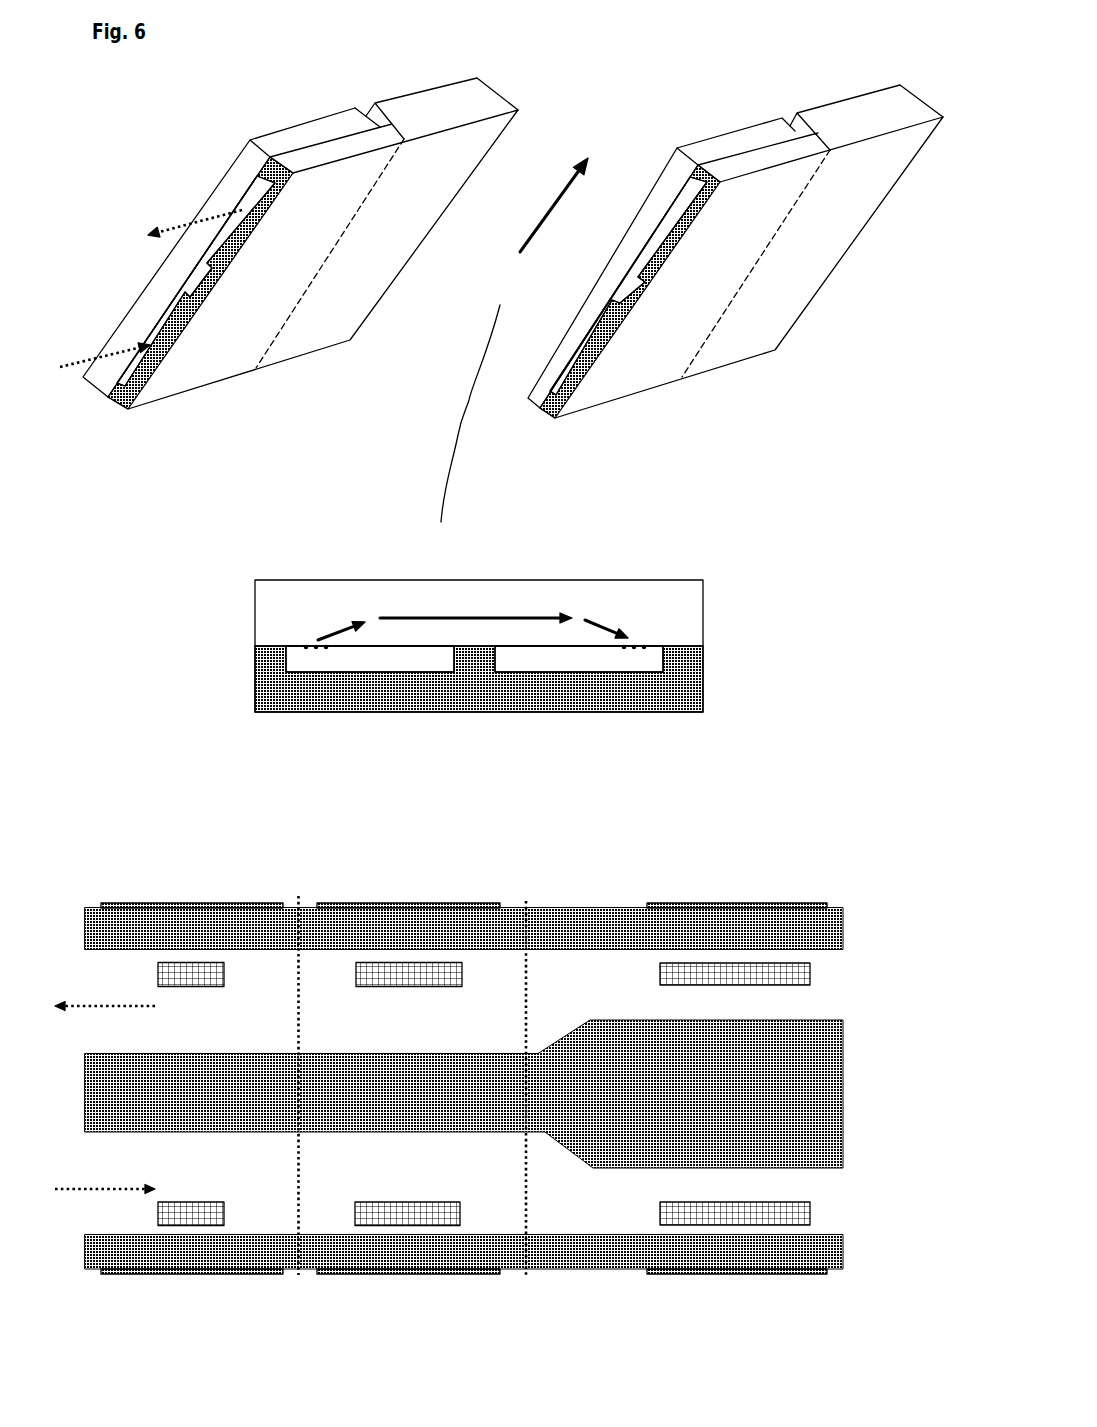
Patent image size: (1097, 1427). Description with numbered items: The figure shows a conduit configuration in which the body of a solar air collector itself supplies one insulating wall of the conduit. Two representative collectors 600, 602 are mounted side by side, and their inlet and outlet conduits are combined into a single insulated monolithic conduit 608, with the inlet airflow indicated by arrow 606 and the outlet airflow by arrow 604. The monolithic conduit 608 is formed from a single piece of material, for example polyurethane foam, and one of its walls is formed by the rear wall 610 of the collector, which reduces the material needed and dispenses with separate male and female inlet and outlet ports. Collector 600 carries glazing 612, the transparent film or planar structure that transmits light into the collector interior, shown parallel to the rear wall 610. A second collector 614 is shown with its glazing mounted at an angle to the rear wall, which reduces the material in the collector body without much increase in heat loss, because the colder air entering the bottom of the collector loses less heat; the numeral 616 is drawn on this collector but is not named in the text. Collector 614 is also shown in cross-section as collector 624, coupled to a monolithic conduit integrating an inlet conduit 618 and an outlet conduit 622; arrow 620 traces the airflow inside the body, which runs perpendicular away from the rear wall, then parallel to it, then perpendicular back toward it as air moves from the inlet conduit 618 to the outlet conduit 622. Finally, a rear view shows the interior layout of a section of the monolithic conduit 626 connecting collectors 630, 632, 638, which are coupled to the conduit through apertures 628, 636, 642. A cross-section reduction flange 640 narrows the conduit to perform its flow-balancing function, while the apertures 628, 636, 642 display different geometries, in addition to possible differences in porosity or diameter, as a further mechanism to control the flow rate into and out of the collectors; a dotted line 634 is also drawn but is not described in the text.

The collector 600 is at (265, 125).
The collector 602 is at (447, 78).
The outlet airflow arrow 604 is at (170, 222).
The inlet airflow arrow 606 is at (92, 350).
The insulated monolithic conduit 608 is at (146, 372).
The rear wall of the collector 610 is at (153, 323).
The glazing 612 is at (207, 192).
The collector 614 is at (692, 135).
The substrate layer of second chip 616 is at (587, 293).
The inlet conduit 618 is at (323, 658).
The airflow arrow 620 is at (328, 622).
The outlet conduit 622 is at (553, 662).
The collector cross-section 624 is at (543, 641).
The monolithic conduit section 626 is at (108, 936).
The aperture 628 is at (184, 956).
The collector 630 is at (261, 898).
The collector 632 is at (364, 902).
The first section boundary 634 is at (299, 889).
The aperture 636 is at (430, 956).
The collector 638 is at (667, 898).
The cross-section reduction flange 640 is at (560, 1017).
The aperture 642 is at (737, 958).